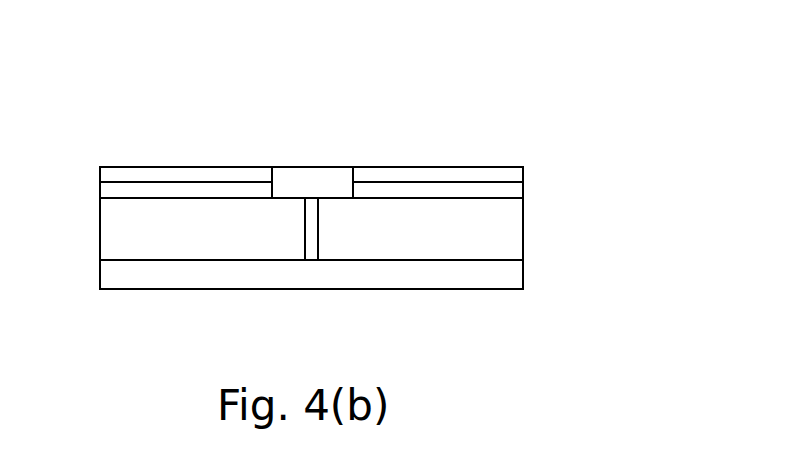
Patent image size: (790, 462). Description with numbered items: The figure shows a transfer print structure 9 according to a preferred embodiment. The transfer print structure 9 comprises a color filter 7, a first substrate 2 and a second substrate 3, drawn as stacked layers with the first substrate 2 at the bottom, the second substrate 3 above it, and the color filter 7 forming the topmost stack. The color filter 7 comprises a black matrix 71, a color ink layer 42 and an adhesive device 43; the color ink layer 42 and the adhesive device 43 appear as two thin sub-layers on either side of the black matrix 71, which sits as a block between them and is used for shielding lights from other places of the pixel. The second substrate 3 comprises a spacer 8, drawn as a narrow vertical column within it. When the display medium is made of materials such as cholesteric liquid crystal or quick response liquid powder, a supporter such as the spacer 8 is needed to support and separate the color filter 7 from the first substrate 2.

The first substrate 2 is at (523, 272).
The second substrate 3 is at (523, 228).
The color filter 7 is at (327, 138).
The spacer 8 is at (318, 220).
The transfer print structure 9 is at (335, 204).
The color ink layer 42 is at (132, 176).
The adhesive device 43 is at (183, 193).
The black matrix 71 is at (306, 176).